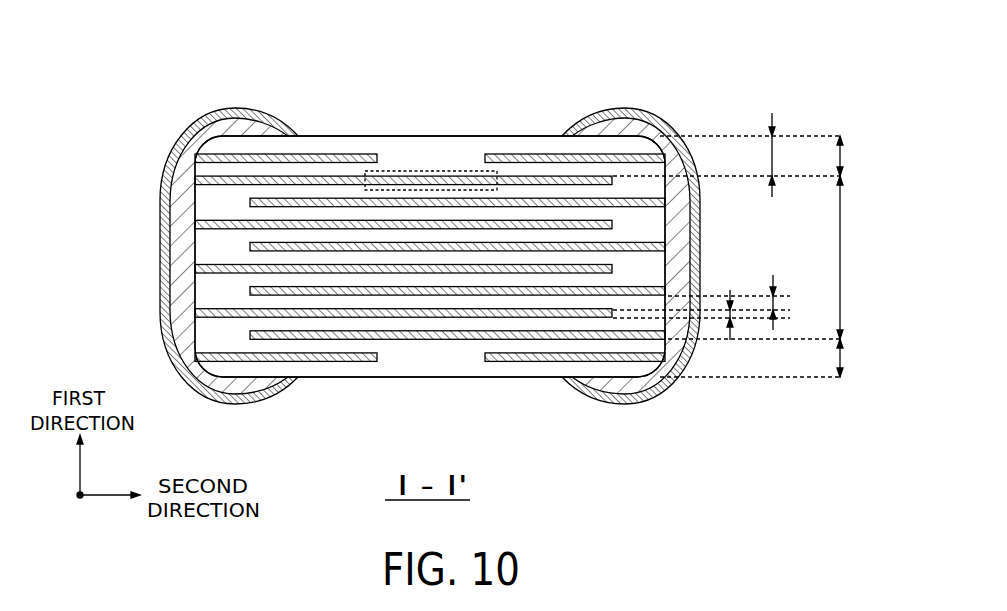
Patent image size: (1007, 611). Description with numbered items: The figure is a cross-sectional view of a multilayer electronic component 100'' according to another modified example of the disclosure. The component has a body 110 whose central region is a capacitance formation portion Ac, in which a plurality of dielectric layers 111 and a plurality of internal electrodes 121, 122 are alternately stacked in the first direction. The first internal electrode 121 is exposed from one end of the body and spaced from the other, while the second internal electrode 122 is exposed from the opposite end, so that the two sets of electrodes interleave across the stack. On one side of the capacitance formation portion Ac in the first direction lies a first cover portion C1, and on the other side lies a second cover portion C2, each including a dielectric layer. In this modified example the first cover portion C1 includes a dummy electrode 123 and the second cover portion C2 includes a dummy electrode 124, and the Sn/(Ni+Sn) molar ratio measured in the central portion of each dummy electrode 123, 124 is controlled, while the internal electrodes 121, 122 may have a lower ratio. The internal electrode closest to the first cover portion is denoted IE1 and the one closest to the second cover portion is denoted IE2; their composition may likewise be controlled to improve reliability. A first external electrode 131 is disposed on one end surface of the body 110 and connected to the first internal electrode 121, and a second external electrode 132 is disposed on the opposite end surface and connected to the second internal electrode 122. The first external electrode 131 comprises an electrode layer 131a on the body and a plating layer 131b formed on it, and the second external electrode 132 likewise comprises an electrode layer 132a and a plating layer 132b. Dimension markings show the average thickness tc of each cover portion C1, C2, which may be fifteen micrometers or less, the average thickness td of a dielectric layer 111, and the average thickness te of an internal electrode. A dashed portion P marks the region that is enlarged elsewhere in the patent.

The multilayer electronic component 100'' is at (431, 231).
The body 110 is at (363, 136).
The dielectric layer 111 is at (297, 212).
The first internal electrode 121 is at (508, 220).
The second internal electrode 122 is at (548, 242).
The dummy electrode 123 is at (247, 113).
The dummy electrode 124 is at (632, 154).
The first external electrode 131 is at (73, 215).
The electrode layer 131a is at (176, 226).
The plating layer 131b is at (164, 260).
The second external electrode 132 is at (787, 215).
The electrode layer 132a is at (682, 226).
The plating layer 132b is at (693, 258).
The portion P is at (409, 171).
The internal electrode closest to the first cover portion IE1 is at (471, 176).
The internal electrode closest to the second cover portion IE2 is at (395, 340).
The average thickness of cover portion tc is at (784, 155).
The average thickness of dielectric layer td is at (785, 302).
The average thickness of internal electrode te is at (742, 315).
The first cover portion C1 is at (853, 156).
The second cover portion C2 is at (853, 358).
The capacitance formation portion Ac is at (853, 257).